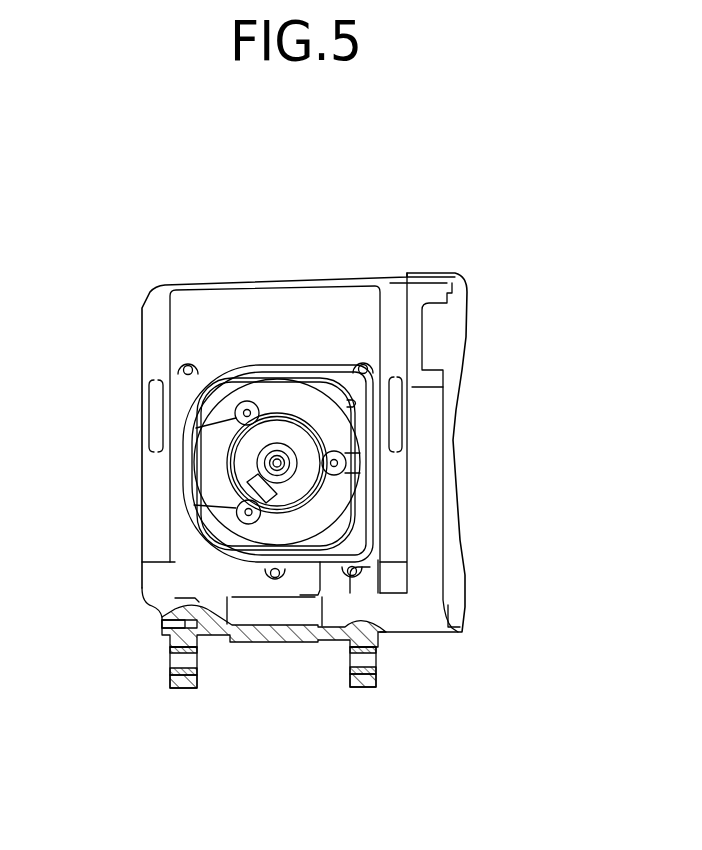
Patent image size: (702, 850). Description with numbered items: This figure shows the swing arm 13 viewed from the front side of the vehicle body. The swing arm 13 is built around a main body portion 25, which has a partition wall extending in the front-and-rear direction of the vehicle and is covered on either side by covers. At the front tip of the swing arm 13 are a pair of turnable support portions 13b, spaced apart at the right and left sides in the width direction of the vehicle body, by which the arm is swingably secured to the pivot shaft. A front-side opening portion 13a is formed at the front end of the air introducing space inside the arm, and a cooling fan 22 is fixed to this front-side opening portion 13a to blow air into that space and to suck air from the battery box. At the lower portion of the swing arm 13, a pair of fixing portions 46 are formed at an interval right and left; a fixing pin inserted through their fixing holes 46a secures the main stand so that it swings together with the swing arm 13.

The swing arm 13 is at (337, 276).
The front-side opening portion 13a is at (349, 404).
The turnable support portions 13b is at (152, 414).
The cooling fan 22 is at (290, 490).
The main body portion 25 is at (225, 308).
The fixing portions 46 is at (168, 690).
The fixing holes 46a is at (170, 662).